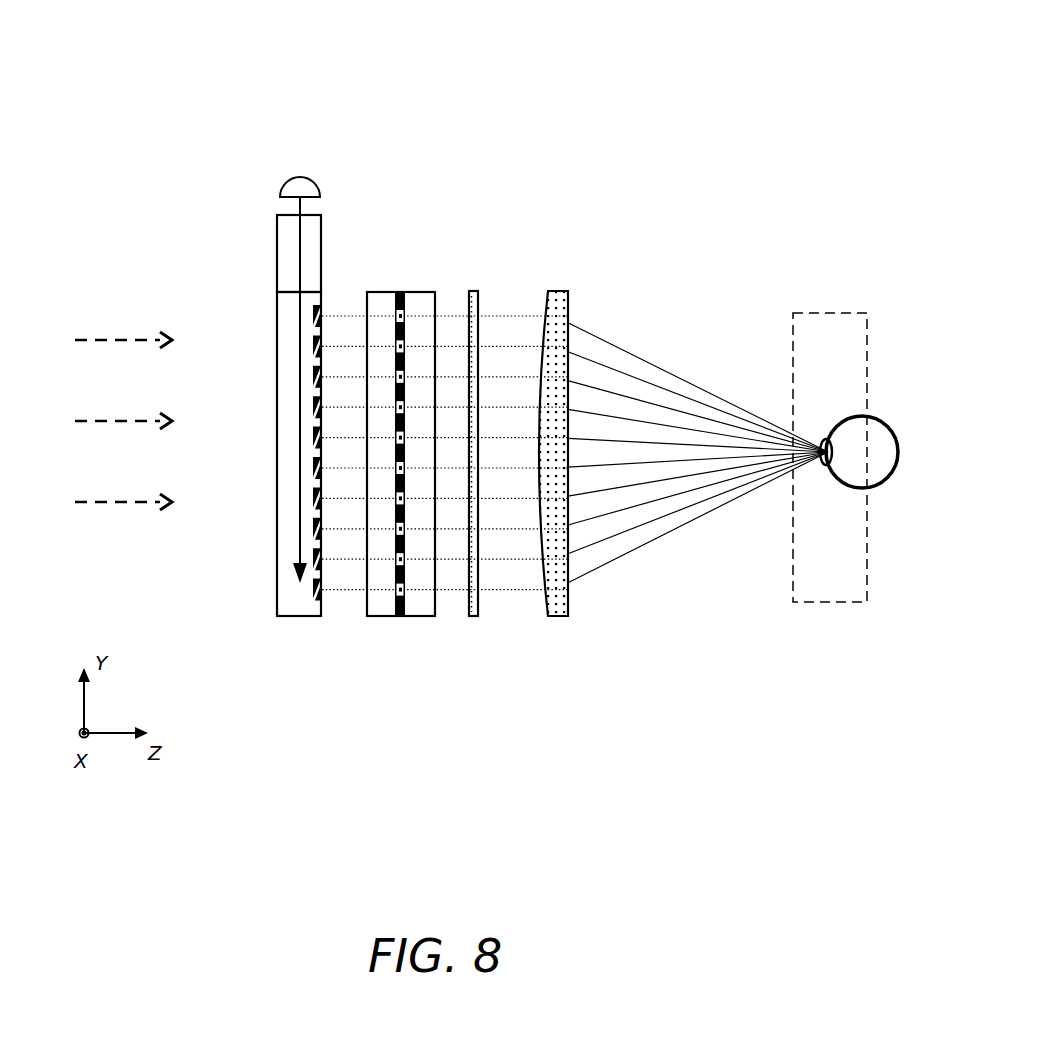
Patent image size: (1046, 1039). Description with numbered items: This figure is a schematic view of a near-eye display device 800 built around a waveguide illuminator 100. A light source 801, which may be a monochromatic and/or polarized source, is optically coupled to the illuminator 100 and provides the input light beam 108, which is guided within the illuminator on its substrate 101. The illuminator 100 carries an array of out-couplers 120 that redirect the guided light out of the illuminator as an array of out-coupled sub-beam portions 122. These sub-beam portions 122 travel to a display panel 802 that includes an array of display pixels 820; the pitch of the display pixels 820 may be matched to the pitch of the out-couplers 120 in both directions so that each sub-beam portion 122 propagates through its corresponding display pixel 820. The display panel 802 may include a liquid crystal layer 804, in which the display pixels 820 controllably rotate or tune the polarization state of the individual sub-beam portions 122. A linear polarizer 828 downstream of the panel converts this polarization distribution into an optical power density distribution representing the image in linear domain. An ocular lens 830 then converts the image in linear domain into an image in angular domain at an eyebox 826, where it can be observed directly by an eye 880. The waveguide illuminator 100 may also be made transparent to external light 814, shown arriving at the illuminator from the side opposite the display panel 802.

The display device 800 is at (507, 120).
The light source 801 is at (300, 174).
The waveguide illuminator 100 is at (182, 280).
The substrate 101 is at (290, 244).
The input light beam 108 is at (293, 438).
The out-couplers 120 is at (320, 498).
The sub-beam portions 122 is at (348, 562).
The display panel 802 is at (398, 402).
The display pixels 820 is at (405, 350).
The liquid crystal layer 804 is at (400, 627).
The linear polarizer 828 is at (472, 291).
The ocular lens 830 is at (556, 292).
The eyebox 826 is at (808, 535).
The eye 880 is at (877, 419).
The external light 814 is at (76, 327).